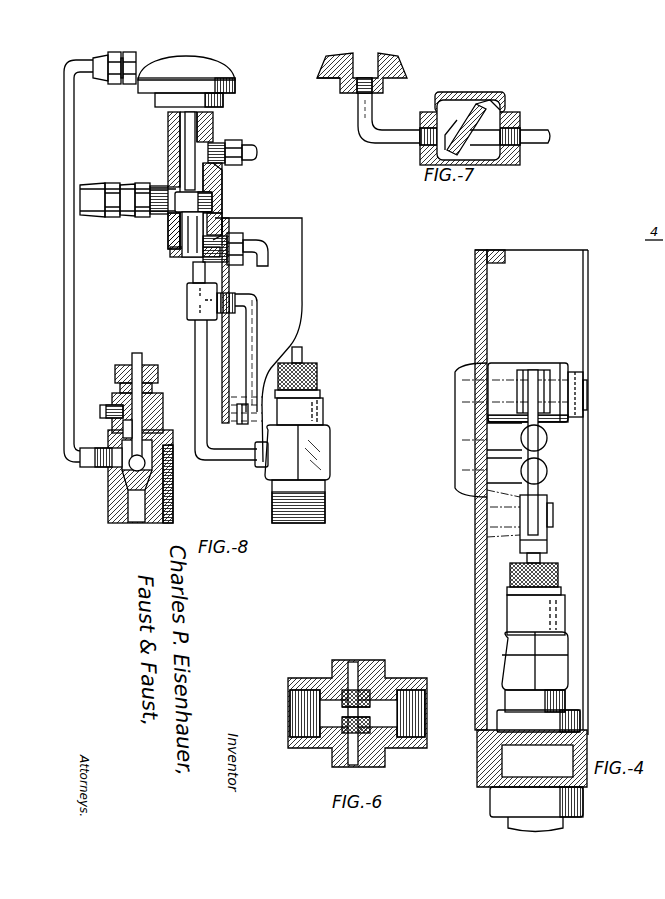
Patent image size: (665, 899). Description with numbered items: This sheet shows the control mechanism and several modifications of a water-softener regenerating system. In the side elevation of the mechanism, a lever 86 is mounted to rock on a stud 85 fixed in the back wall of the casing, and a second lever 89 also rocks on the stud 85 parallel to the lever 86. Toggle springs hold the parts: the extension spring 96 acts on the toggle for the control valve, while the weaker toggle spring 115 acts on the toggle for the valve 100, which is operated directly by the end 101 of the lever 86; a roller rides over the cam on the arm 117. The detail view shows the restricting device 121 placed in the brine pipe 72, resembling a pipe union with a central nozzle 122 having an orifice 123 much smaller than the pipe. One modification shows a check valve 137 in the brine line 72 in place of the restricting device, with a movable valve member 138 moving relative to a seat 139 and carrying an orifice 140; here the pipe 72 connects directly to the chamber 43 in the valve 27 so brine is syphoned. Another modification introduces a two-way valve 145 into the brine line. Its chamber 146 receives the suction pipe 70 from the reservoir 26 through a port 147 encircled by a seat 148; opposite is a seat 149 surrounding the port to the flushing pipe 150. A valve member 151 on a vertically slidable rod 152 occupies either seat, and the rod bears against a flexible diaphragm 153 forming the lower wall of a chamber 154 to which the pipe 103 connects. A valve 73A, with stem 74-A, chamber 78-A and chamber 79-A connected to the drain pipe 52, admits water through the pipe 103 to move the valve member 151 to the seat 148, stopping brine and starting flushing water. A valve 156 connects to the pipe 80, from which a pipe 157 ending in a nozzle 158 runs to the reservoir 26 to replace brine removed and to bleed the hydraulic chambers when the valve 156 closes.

In FIG. 8, the chamber 154 is at (207, 61).
In FIG. 8, the pipe 103 is at (98, 80).
In FIG. 8, the flexible diaphragm 153 is at (152, 95).
In FIG. 8, the vertically slidable rod 152 is at (212, 134).
In FIG. 8, the pipe 150 is at (243, 148).
In FIG. 8, the two-way valve 145 is at (170, 148).
In FIG. 8, the valve seat 149 is at (172, 190).
In FIG. 8, the brine pipe 72 is at (96, 189).
In FIG. 7, the brine pipe 72 is at (373, 118).
In FIG. 8, the valve member 151 is at (214, 198).
In FIG. 8, the chamber 146 is at (224, 206).
In FIG. 8, the valve seat 148 is at (166, 220).
In FIG. 8, the port 147 is at (190, 243).
In FIG. 8, the reservoir 26 is at (290, 229).
In FIG. 8, the suction pipe 70 is at (270, 251).
In FIG. 8, the pipe 80 is at (193, 277).
In FIG. 8, the pipe 157 is at (252, 313).
In FIG. 8, the nozzle 158 is at (246, 421).
In FIG. 8, the valve 156 is at (326, 435).
In FIG. 8, the drain pipe 52 is at (106, 405).
In FIG. 8, the valve 73A is at (160, 410).
In FIG. 8, the valve stem 74-A is at (143, 358).
In FIG. 8, the chamber 78-A is at (124, 470).
In FIG. 8, the chamber 79-A is at (123, 419).
In FIG. 7, the chamber 43 is at (378, 66).
In FIG. 7, the valve 27 is at (332, 78).
In FIG. 7, the check valve 137 is at (469, 94).
In FIG. 7, the movable valve member 138 is at (473, 129).
In FIG. 7, the seat 139 is at (472, 135).
In FIG. 7, the orifice 140 is at (477, 105).
In FIG. 4, the lever 86 is at (505, 364).
In FIG. 4, the lever 89 is at (560, 364).
In FIG. 4, the end of lever 101 is at (520, 370).
In FIG. 4, the stud 85 is at (586, 393).
In FIG. 4, the arm 117 is at (539, 424).
In FIG. 4, the extension spring 96 is at (546, 453).
In FIG. 4, the toggle spring 115 is at (547, 484).
In FIG. 4, the valve 100 is at (568, 626).
In FIG. 6, the restricting device 121 is at (356, 661).
In FIG. 6, the nozzle 122 is at (326, 748).
In FIG. 6, the orifice 123 is at (372, 713).